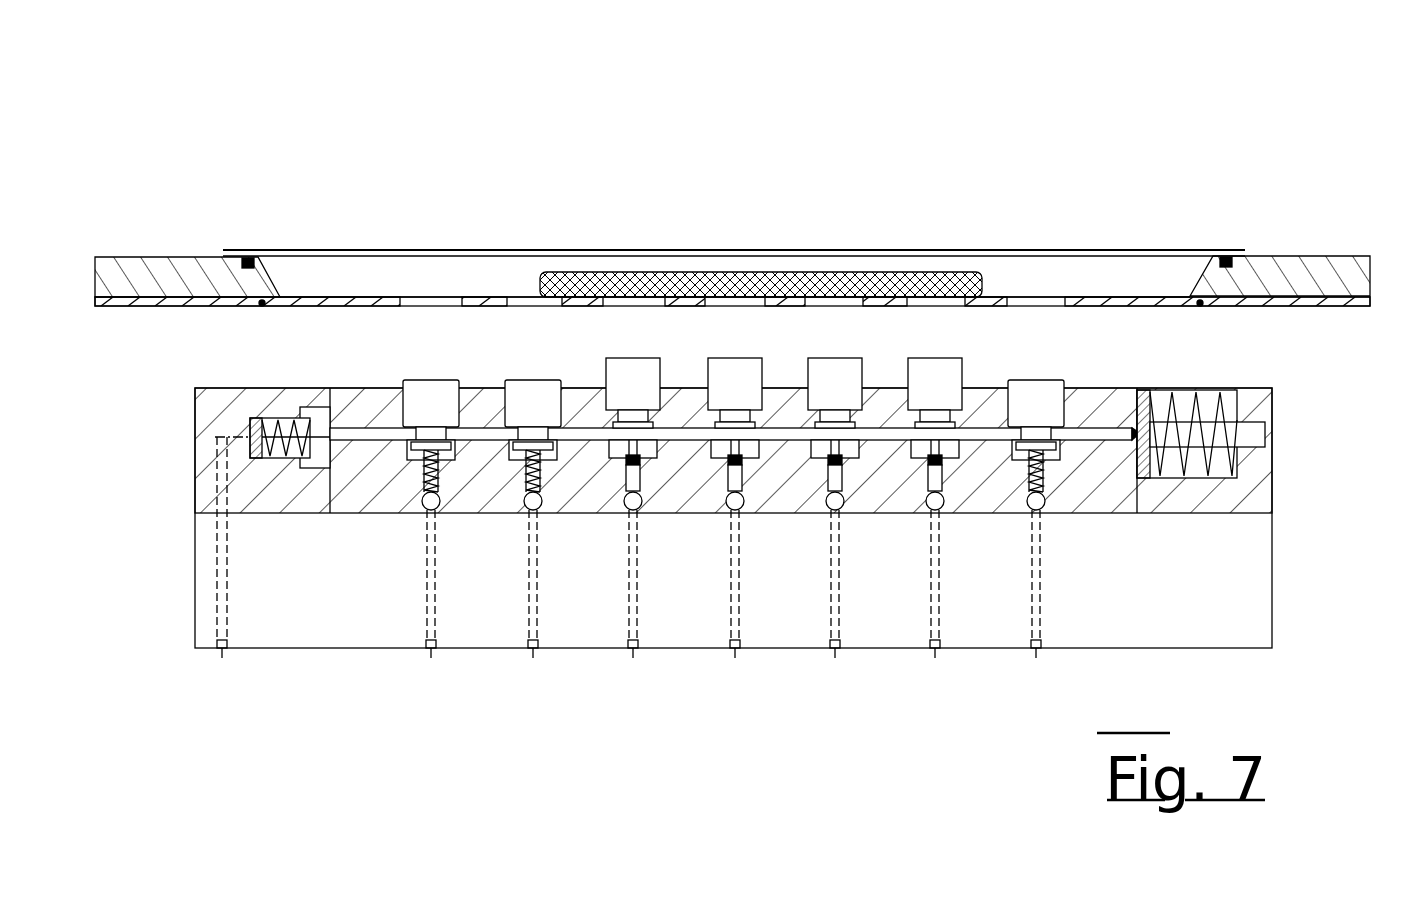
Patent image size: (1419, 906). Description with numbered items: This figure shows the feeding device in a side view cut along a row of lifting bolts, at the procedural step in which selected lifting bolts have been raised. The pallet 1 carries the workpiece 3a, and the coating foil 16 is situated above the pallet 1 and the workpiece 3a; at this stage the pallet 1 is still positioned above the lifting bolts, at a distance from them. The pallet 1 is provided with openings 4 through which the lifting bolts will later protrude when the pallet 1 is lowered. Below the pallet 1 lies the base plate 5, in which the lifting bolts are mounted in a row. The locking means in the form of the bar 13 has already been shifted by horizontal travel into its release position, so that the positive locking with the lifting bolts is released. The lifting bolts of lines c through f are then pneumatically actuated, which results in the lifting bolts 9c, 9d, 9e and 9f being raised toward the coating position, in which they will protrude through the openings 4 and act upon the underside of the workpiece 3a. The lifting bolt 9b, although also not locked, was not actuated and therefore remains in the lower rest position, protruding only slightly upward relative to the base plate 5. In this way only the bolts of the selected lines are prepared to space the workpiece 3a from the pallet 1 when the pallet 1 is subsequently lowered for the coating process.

The pallet 1 is at (1340, 265).
The workpiece 3a is at (586, 278).
The openings 4 is at (1050, 300).
The base plate 5 is at (282, 376).
The lifting bolt 9b is at (538, 385).
The lifting bolt 9c is at (642, 370).
The lifting bolt 9d is at (748, 370).
The lifting bolt 9e is at (848, 370).
The lifting bolt 9f is at (945, 370).
The bar 13 is at (1137, 392).
The coating foil 16 is at (1190, 250).